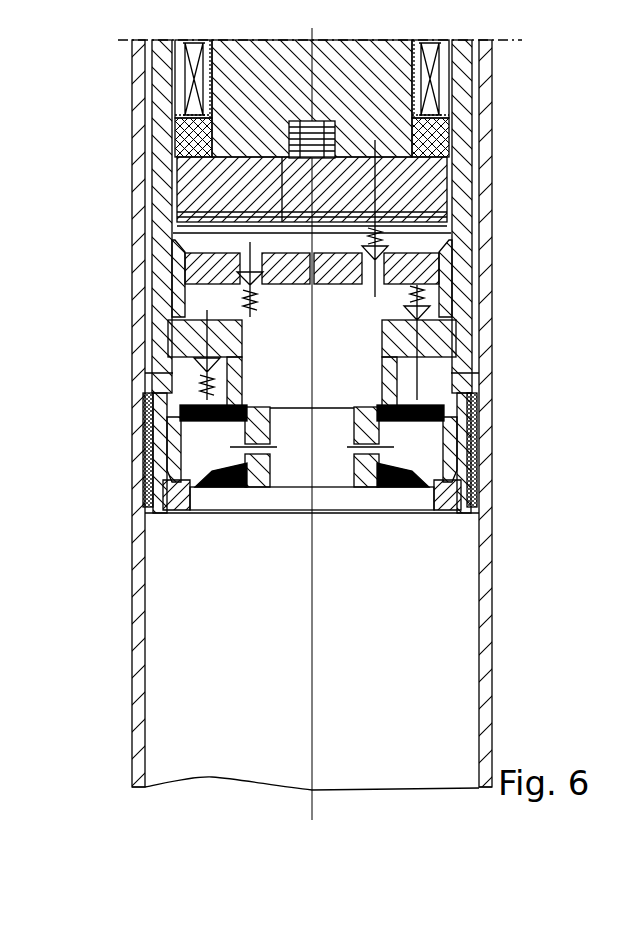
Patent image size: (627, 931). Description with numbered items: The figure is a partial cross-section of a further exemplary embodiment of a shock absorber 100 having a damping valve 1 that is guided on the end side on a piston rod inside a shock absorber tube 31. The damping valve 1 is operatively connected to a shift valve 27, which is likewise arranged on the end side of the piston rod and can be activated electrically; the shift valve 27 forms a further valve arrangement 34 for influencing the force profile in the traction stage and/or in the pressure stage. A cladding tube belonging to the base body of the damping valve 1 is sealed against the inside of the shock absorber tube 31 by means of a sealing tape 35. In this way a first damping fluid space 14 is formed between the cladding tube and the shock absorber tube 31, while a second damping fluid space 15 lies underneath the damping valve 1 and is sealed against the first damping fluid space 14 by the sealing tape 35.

The shock absorber 100 is at (544, 139).
The shift valve 27 is at (222, 185).
The shock absorber tube 31 is at (481, 525).
The first damping fluid space 14 is at (473, 323).
The further valve arrangement 34 is at (404, 271).
The sealing tape 35 is at (472, 442).
The damping valve 1 is at (375, 513).
The second damping fluid space 15 is at (233, 595).